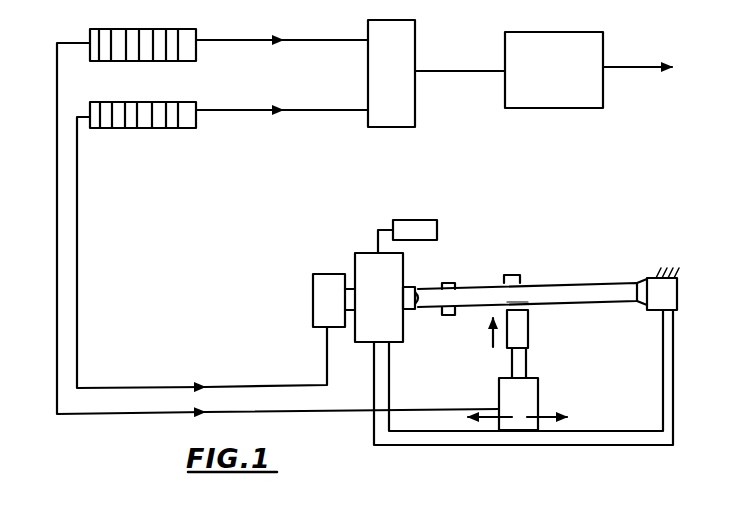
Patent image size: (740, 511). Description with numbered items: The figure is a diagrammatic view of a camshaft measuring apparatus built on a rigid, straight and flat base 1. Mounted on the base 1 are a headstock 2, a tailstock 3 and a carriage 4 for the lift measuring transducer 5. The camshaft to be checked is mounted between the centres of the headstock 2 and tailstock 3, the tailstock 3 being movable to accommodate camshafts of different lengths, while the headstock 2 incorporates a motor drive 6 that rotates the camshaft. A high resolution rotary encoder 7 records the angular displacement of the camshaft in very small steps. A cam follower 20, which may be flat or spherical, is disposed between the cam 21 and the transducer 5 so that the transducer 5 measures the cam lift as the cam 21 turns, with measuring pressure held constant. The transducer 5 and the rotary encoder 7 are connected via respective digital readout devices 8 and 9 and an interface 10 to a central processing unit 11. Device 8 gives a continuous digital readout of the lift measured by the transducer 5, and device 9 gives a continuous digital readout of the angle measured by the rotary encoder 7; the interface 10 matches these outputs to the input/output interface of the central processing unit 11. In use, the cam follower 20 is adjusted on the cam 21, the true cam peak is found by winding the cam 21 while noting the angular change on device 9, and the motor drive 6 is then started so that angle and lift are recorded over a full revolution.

The base 1 is at (663, 370).
The headstock 2 is at (386, 297).
The tailstock 3 is at (660, 292).
The carriage 4 is at (532, 398).
The transducer 5 is at (512, 362).
The motor drive 6 is at (435, 228).
The rotary encoder 7 is at (322, 315).
The digital readout device 8 is at (121, 50).
The digital readout device 9 is at (133, 118).
The interface 10 is at (391, 73).
The central processing unit 11 is at (554, 70).
The cam follower 20 is at (520, 330).
The cam 21 is at (578, 292).